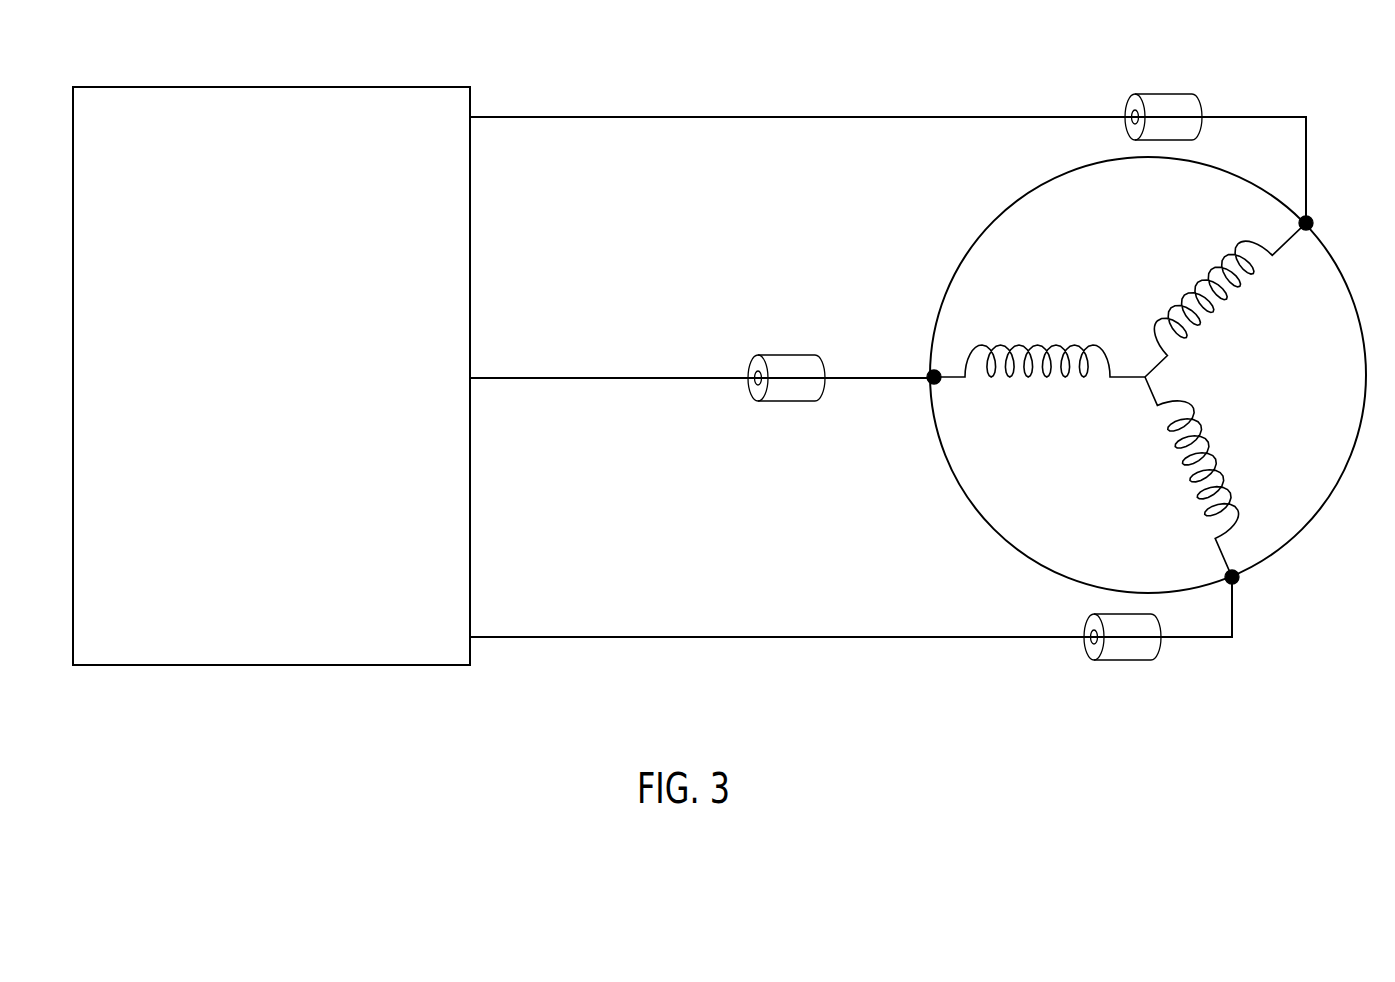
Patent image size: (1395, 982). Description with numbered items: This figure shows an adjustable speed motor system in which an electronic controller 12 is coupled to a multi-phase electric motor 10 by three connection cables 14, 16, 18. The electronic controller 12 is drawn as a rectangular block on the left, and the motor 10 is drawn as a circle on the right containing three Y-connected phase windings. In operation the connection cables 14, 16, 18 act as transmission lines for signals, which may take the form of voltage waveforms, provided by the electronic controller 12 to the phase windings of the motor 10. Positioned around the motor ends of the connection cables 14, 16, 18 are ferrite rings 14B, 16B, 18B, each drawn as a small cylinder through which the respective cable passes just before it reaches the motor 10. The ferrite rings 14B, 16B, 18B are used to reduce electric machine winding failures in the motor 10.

The multi-phase electric motor 10 is at (1300, 530).
The electronic controller 12 is at (372, 665).
The connection cable 14 is at (627, 117).
The connection cable 16 is at (598, 378).
The connection cable 18 is at (598, 637).
The ferrite ring 14B is at (1148, 91).
The ferrite ring 16B is at (783, 351).
The ferrite ring 18B is at (1096, 663).